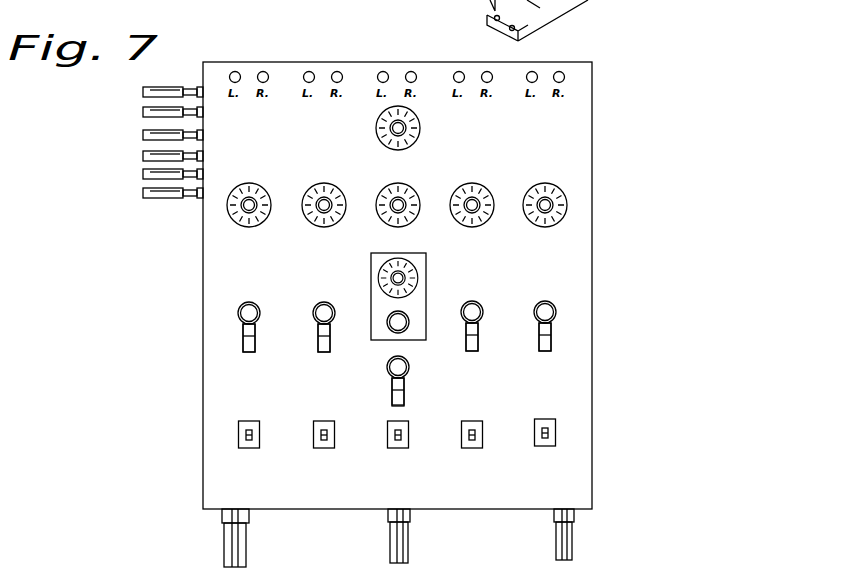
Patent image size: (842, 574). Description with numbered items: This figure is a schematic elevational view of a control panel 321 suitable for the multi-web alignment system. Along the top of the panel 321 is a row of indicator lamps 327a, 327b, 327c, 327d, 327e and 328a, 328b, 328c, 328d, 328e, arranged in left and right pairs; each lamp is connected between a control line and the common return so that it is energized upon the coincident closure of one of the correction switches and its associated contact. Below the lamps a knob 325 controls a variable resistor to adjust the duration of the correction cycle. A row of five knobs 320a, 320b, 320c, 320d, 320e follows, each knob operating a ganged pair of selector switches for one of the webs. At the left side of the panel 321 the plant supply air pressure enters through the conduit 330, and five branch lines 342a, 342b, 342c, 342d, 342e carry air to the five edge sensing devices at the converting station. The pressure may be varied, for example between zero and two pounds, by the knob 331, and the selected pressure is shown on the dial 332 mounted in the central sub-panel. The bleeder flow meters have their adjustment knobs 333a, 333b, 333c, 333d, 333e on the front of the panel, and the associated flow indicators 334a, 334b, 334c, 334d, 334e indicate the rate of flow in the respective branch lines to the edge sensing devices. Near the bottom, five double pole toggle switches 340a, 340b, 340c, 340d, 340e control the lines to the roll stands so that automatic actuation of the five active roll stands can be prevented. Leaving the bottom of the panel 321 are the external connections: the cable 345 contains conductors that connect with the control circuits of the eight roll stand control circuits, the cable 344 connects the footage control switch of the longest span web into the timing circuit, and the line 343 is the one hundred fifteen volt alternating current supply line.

The control panel 321 is at (193, 322).
The indicator lamp 327a is at (235, 71).
The indicator lamp 328a is at (263, 71).
The indicator lamp 327b is at (309, 71).
The indicator lamp 328b is at (337, 71).
The indicator lamp 327c is at (383, 71).
The indicator lamp 328c is at (411, 71).
The indicator lamp 327d is at (459, 71).
The indicator lamp 328d is at (493, 74).
The indicator lamp 327e is at (538, 74).
The indicator lamp 328e is at (565, 78).
The conduit 330 is at (150, 90).
The branch line 342a is at (150, 112).
The branch line 342b is at (150, 135).
The branch line 342c is at (150, 156).
The branch line 342d is at (150, 175).
The branch line 342e is at (155, 196).
The knob 325 is at (405, 134).
The knob 320a is at (246, 236).
The knob 320b is at (321, 236).
The knob 320c is at (427, 184).
The knob 320d is at (496, 183).
The knob 320e is at (558, 179).
The dial 332 is at (424, 266).
The knob 331 is at (405, 322).
The adjustment knob 333a is at (240, 310).
The adjustment knob 333b is at (315, 311).
The adjustment knob 333c is at (405, 365).
The adjustment knob 333d is at (480, 305).
The adjustment knob 333e is at (549, 301).
The flow indicator 334a is at (255, 343).
The flow indicator 334b is at (330, 343).
The flow indicator 334c is at (404, 394).
The flow indicator 334d is at (478, 342).
The flow indicator 334e is at (565, 356).
The toggle switch 340a is at (249, 449).
The toggle switch 340b is at (323, 449).
The toggle switch 340c is at (398, 449).
The toggle switch 340d is at (472, 449).
The toggle switch 340e is at (545, 447).
The cable 345 is at (246, 547).
The cable 344 is at (408, 545).
The A. C. supply line 343 is at (572, 541).